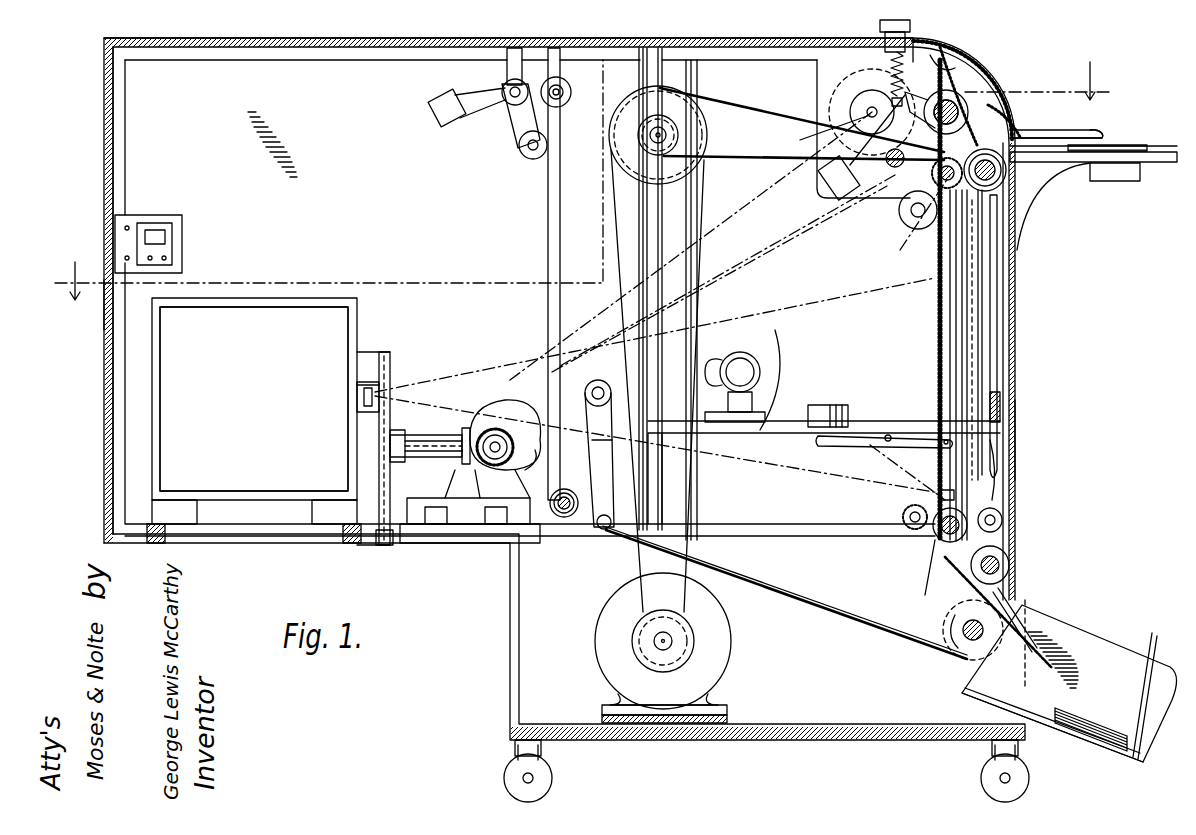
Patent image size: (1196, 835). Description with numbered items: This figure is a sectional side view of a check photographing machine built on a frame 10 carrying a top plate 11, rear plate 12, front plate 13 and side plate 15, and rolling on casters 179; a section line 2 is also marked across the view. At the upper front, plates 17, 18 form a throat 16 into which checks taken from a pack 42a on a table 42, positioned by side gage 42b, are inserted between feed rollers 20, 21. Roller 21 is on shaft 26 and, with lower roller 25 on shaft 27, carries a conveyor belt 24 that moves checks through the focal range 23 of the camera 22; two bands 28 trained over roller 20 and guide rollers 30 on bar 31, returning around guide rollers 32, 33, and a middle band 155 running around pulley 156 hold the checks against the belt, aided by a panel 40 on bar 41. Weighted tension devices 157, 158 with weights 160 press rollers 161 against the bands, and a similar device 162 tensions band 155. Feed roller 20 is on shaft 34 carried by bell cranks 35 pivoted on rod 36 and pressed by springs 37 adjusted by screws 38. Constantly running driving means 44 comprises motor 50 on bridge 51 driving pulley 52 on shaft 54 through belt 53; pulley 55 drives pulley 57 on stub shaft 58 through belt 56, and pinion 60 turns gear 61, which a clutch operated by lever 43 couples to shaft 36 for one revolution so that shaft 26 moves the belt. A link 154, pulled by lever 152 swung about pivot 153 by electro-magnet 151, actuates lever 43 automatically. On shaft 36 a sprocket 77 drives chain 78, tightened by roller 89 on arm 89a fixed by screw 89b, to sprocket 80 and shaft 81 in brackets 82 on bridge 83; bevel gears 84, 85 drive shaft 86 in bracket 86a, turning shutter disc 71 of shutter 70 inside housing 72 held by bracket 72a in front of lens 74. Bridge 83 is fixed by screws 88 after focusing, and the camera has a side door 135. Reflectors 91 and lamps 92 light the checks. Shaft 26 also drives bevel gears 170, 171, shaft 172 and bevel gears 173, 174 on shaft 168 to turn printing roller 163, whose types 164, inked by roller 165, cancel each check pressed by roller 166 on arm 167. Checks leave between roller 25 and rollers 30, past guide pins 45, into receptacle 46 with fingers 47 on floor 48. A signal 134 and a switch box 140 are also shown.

The section line 2- 2 is at (582, 180).
The frame 10 is at (122, 180).
The top plate 11 is at (418, 40).
The rear plate 12 is at (112, 308).
The front plate 13 is at (1016, 445).
The side plate 15 is at (132, 104).
The throat 16 is at (1010, 126).
The plate 17 is at (1050, 134).
The plate 18 is at (968, 90).
The feed roller 20 is at (1118, 143).
The feed roller 21 is at (1003, 178).
The camera 22 is at (268, 298).
The focal range 23 is at (778, 402).
The conveyor belt 24 is at (968, 235).
The roller 25 is at (1005, 553).
The shaft 26 is at (1008, 172).
The shaft 27 is at (1000, 565).
The bands 28 is at (548, 255).
The guide rollers 30 is at (950, 645).
The bar 31 is at (965, 640).
The guide roller 32 is at (578, 496).
The guide roller 33 is at (560, 105).
The shaft 34 is at (908, 225).
The bell cranks 35 is at (886, 164).
The rod 36 is at (952, 92).
The springs 37 is at (894, 70).
The adjusting screws 38 is at (880, 24).
The panel 40 is at (992, 318).
The bar 41 is at (1002, 404).
The table 42 is at (1150, 162).
The pack 42a is at (1150, 128).
The adjustable side gage 42b is at (980, 82).
The lever 43 is at (1095, 130).
The driving means 44 is at (714, 178).
The guide pins 45 is at (1036, 668).
The receptacle 46 is at (1111, 622).
The fingers 47 is at (1140, 704).
The floor 48 is at (1040, 725).
The electric motor 50 is at (722, 630).
The bridge 51 is at (655, 722).
The pulley 52 is at (624, 150).
The belt 53 is at (690, 495).
The shaft 54 is at (654, 130).
The pulley 55 is at (684, 133).
The belt 56 is at (748, 95).
The pulley 57 is at (818, 110).
The stub shaft 58 is at (830, 140).
The pinion 60 is at (856, 104).
The gear 61 is at (938, 60).
The shutter 70 is at (403, 354).
The disc 71 is at (379, 366).
The housing 72 is at (377, 424).
The bracket 72a is at (380, 545).
The lens 74 is at (362, 395).
The sprocket 77 is at (949, 100).
The chain 78 is at (598, 322).
The sprocket 80 is at (510, 398).
The shaft 81 is at (500, 440).
The brackets 82 is at (470, 480).
The bridge 83 is at (438, 528).
The bevel gear 84 is at (512, 474).
The bevel gear 85 is at (468, 430).
The shaft 86 is at (440, 436).
The bracket 86a is at (438, 436).
The screws 88 is at (208, 524).
The roller 89 is at (588, 386).
The adjustable arm 89a is at (596, 465).
The screw 89b is at (604, 530).
The reflectors 91 is at (691, 368).
The electric lamp 92 is at (742, 358).
The signal 134 is at (172, 238).
The side door 135 is at (236, 312).
The switch box 140 is at (1125, 178).
The electro-magnet 151 is at (825, 406).
The lever 152 is at (870, 446).
The pivot 153 is at (886, 432).
The link 154 is at (950, 357).
The third band 155 is at (938, 298).
The pulley 156 is at (946, 625).
The roller arm 157 is at (502, 126).
The roller 158 is at (510, 86).
The weights 160 is at (446, 116).
The rollers 161 is at (530, 155).
The tensioning device 162 is at (889, 212).
The printing roller 163 is at (933, 535).
The types 164 is at (945, 535).
The ink roller 165 is at (905, 510).
The pressure roller 166 is at (1003, 520).
The arm 167 is at (997, 485).
The shaft 168 is at (948, 540).
The bevel gear 170 is at (1012, 150).
The bevel gear 171 is at (985, 200).
The shaft 172 is at (990, 200).
The bevel gear 173 is at (940, 498).
The bevel gear 174 is at (950, 560).
The casters 179 is at (553, 780).